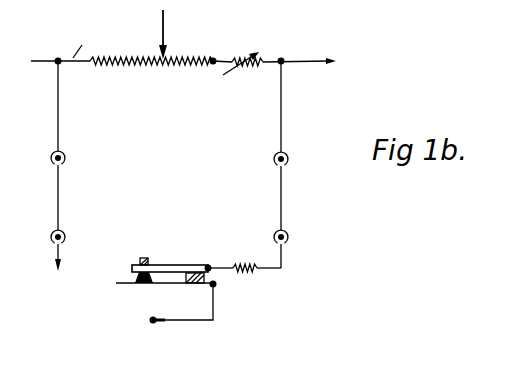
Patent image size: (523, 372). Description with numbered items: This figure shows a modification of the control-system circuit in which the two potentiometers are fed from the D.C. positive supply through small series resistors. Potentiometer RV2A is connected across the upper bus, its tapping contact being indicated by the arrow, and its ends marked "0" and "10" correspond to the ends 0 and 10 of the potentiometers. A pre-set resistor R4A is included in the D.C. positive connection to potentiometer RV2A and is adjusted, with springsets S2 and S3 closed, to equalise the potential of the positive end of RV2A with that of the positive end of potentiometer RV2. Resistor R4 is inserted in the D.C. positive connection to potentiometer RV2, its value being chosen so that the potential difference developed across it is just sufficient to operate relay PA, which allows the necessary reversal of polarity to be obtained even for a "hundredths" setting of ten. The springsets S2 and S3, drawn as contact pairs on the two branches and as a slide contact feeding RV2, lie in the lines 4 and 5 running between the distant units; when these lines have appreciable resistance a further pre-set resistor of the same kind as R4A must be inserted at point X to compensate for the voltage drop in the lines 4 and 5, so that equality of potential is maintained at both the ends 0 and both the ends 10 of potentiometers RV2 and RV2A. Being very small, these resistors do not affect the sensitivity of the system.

The point X is at (81, 42).
The potentiometer RV2A is at (127, 56).
The pre-set resistor R4A is at (238, 55).
The end "0" 0 is at (88, 82).
The end "10" 10 is at (180, 193).
The line 4 is at (49, 161).
The line 5 is at (288, 164).
The springset S2 is at (59, 279).
The springset S3 is at (185, 281).
The resistor R4 is at (244, 260).
The potentiometer RV2 is at (182, 316).